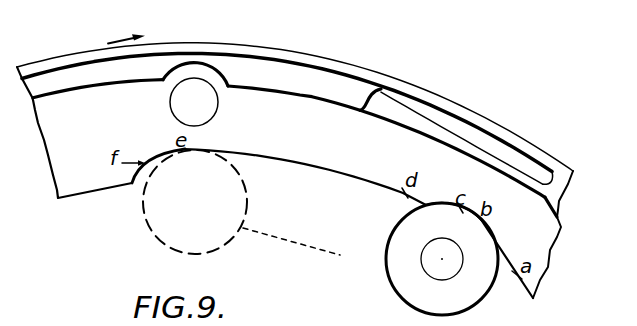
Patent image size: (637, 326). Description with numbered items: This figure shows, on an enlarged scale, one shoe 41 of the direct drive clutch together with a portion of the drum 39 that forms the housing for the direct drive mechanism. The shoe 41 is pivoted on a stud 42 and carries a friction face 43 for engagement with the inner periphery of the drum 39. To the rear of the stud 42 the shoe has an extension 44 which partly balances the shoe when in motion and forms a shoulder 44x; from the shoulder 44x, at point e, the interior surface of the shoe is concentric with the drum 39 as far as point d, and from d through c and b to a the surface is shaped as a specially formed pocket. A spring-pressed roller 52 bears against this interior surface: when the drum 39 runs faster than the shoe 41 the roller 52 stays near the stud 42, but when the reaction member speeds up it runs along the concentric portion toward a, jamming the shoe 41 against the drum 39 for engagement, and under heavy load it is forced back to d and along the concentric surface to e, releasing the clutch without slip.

The drum 39 is at (330, 51).
The shoe 41 is at (359, 217).
The stud 42 is at (202, 92).
The friction face 43 is at (462, 125).
The extension 44 is at (297, 180).
The shoulder 44x is at (152, 157).
The roller 52 is at (402, 257).